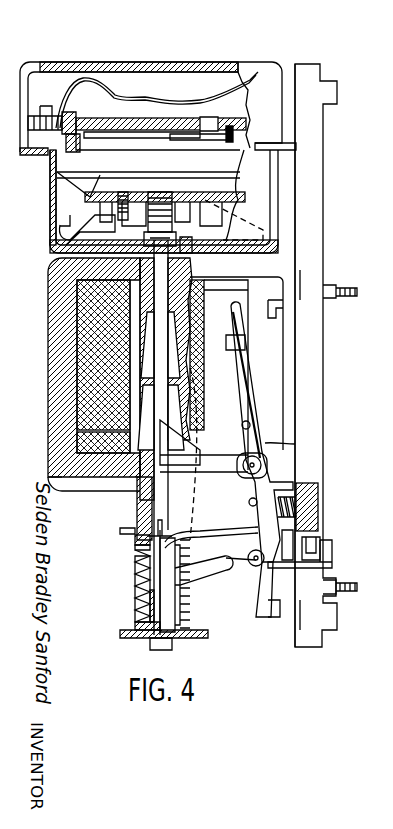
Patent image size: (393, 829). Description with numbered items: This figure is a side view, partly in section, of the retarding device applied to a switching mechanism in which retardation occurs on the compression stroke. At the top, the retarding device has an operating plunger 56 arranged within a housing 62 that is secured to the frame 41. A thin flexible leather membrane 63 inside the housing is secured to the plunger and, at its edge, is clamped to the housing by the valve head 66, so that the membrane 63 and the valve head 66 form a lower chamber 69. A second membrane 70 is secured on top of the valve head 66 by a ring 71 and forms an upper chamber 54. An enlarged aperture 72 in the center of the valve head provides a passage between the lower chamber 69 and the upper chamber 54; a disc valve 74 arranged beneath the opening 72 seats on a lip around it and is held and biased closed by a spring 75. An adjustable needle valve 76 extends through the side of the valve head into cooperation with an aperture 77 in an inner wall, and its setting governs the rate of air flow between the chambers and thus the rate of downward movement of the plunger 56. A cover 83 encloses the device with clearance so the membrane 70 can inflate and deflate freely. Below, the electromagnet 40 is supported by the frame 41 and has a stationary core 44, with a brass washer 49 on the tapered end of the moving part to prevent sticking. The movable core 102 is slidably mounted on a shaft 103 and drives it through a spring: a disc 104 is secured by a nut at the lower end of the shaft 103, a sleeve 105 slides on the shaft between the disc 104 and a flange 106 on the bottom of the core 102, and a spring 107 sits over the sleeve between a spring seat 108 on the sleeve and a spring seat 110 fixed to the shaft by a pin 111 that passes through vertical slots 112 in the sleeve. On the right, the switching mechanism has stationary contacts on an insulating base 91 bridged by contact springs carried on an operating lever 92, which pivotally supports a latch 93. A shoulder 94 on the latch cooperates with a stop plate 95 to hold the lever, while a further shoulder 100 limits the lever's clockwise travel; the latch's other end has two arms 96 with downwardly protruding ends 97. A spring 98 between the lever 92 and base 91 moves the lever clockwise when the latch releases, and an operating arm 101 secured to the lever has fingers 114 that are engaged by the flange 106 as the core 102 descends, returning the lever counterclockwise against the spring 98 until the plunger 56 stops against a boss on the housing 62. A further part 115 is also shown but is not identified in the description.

The electromagnet 40 is at (77, 316).
The frame 41 is at (48, 280).
The stationary core 44 is at (198, 302).
The brass washer 49 is at (186, 378).
The upper chamber 54 is at (161, 122).
The operating plunger 56 is at (70, 222).
The housing 62 is at (50, 212).
The membrane 63 is at (83, 177).
The valve head 66 is at (230, 125).
The lower chamber 69 is at (148, 162).
The membrane 70 is at (148, 96).
The ring 71 is at (50, 108).
The enlarged aperture 72 is at (186, 120).
The valve 74 is at (148, 168).
The spring 75 is at (200, 141).
The adjustable needle valve 76 is at (70, 114).
The aperture 77 is at (85, 143).
The cover 83 is at (232, 70).
The insulating base 91 is at (324, 224).
The operating lever 92 is at (258, 362).
The latch 93 is at (334, 562).
The shoulder 94 is at (311, 548).
The stop plate 95 is at (285, 545).
The arms 96 is at (214, 578).
The ends 97 is at (190, 582).
The spring 98 is at (290, 488).
The further shoulder 100 is at (324, 556).
The operating arm 101 is at (210, 530).
The core 102 is at (137, 498).
The shaft 103 is at (162, 418).
The disc 104 is at (200, 639).
The sleeve 105 is at (137, 600).
The flange 106 is at (120, 528).
The spring 107 is at (137, 568).
The spring seat 108 is at (135, 624).
The spring seat 110 is at (135, 538).
The pin 111 is at (135, 548).
The slots 112 is at (136, 580).
The fingers 114 is at (149, 528).
The pin 115 is at (140, 135).